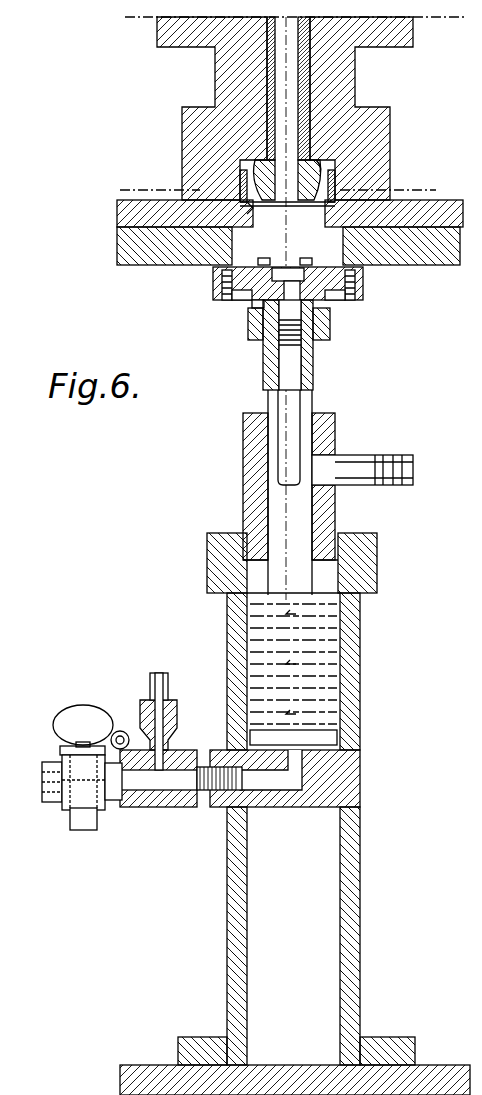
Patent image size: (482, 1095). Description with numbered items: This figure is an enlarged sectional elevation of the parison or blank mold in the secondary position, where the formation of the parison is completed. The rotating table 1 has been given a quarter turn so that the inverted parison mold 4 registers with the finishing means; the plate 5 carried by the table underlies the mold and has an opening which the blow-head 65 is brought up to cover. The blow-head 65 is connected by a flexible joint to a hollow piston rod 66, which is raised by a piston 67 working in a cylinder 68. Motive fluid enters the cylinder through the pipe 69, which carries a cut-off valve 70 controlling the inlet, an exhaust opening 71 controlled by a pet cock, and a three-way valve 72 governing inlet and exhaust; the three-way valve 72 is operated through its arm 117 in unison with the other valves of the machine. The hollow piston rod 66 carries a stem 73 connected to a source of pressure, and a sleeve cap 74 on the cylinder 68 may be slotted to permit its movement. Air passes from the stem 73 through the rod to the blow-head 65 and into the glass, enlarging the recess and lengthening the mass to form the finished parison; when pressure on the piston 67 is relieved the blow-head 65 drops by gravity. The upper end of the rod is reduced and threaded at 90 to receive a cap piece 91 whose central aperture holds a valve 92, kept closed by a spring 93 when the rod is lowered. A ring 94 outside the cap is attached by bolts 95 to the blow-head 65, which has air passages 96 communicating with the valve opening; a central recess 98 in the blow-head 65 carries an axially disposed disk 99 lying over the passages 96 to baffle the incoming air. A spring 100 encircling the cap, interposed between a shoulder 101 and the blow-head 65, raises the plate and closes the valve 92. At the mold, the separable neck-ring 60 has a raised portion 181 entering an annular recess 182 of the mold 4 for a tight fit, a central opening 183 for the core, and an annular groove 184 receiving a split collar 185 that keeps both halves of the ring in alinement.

The table 1 is at (450, 268).
The parison mold 4 is at (212, 70).
The plate 5 is at (464, 215).
The separable neck-ring 60 is at (337, 177).
The blow-head 65 is at (358, 292).
The hollow piston rod 66 is at (314, 400).
The piston 67 is at (362, 655).
The cylinder 68 is at (338, 743).
The pipe 69 is at (45, 800).
The cut-off valve 70 is at (95, 800).
The exhaust opening 71 is at (158, 678).
The three-way valve 72 is at (160, 795).
The stem 73 is at (396, 484).
The sleeve cap 74 is at (245, 510).
The threaded end 90 is at (332, 347).
The cap piece 91 is at (252, 312).
The valve 92 is at (262, 352).
The spring 93 is at (313, 345).
The ring 94 is at (240, 300).
The bolts 95 is at (347, 300).
The passages 96 is at (304, 253).
The central recess 98 is at (220, 294).
The disk 99 is at (268, 253).
The spring 100 is at (250, 322).
The shoulder 101 is at (330, 324).
The arm 117 is at (116, 732).
The raised portion 181 is at (322, 163).
The annular recess 182 is at (325, 165).
The central opening 183 is at (238, 176).
The annular groove 184 is at (252, 208).
The split collar 185 is at (405, 192).